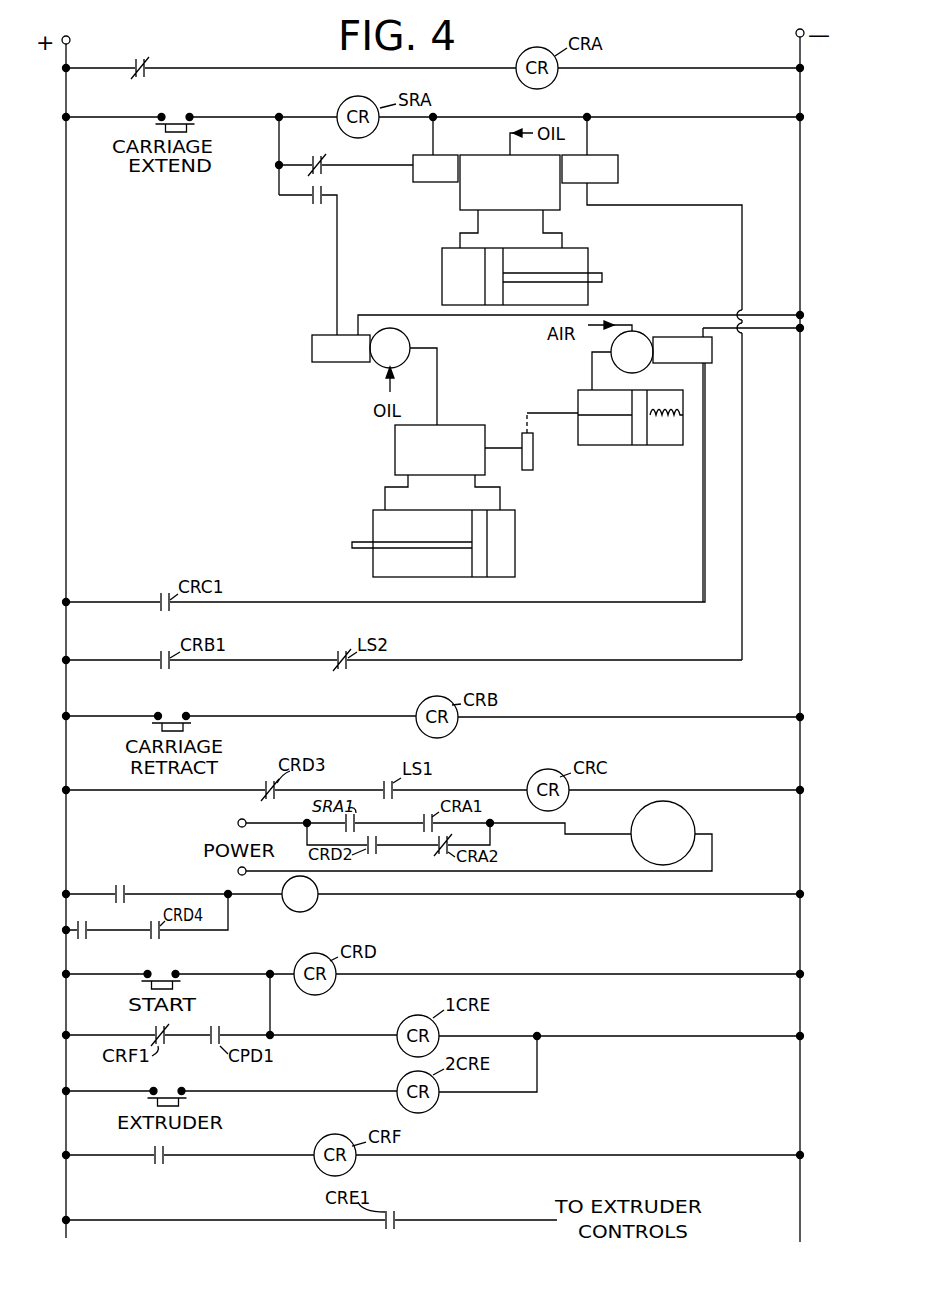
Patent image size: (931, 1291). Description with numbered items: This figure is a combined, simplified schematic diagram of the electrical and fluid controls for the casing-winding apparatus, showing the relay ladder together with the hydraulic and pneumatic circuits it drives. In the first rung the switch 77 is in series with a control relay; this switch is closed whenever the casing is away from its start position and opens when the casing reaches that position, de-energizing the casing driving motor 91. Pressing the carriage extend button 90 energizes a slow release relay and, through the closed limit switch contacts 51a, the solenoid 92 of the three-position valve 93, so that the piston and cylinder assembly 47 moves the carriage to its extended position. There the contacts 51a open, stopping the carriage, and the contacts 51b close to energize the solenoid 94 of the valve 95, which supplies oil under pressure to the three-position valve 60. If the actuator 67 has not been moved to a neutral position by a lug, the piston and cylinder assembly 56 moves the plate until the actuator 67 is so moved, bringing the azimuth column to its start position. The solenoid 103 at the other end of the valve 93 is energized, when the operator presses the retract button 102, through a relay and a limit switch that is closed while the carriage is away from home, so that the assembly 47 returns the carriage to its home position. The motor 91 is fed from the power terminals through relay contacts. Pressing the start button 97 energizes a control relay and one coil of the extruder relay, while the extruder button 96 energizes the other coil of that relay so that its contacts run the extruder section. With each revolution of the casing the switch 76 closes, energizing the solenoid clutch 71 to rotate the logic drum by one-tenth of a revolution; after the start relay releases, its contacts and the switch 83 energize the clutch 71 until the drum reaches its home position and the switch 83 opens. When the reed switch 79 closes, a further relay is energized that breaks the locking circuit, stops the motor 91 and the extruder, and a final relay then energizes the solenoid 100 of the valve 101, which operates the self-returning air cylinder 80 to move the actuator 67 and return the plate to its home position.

The switch 77 is at (136, 60).
The carriage extend button 90 is at (195, 127).
The limit switch contacts 51a is at (312, 160).
The limit switch contacts 51b is at (312, 200).
The solenoid 92 is at (429, 154).
The three-position valve 93 is at (460, 196).
The solenoid 103 is at (612, 156).
The piston and cylinder assembly 47 is at (442, 275).
The solenoid 94 is at (323, 334).
The valve 95 is at (410, 340).
The valve 101 is at (612, 340).
The solenoid 100 is at (691, 364).
The three-position valve 60 is at (480, 425).
The actuator 67 is at (535, 460).
The self-returning air cylinder 80 is at (680, 446).
The piston and cylinder assembly 56 is at (515, 553).
The retract button 102 is at (190, 730).
The casing driving motor 91 is at (692, 818).
The switch 76 is at (123, 891).
The solenoid clutch 71 is at (318, 892).
The switch 83 is at (86, 922).
The start button 97 is at (183, 990).
The extruder button 96 is at (185, 1106).
The reed switch 79 is at (152, 1165).